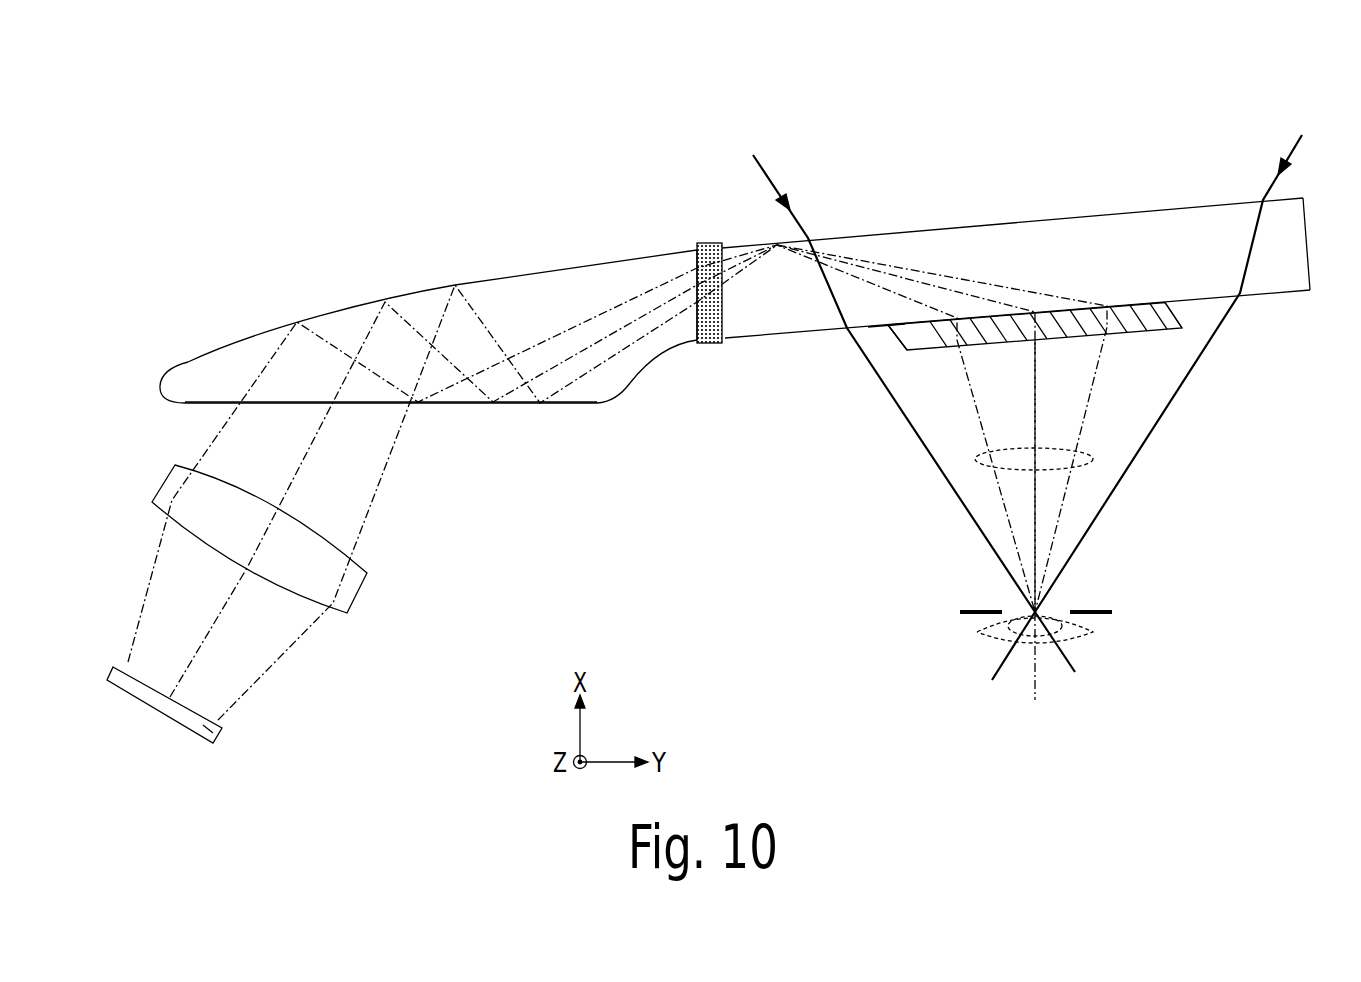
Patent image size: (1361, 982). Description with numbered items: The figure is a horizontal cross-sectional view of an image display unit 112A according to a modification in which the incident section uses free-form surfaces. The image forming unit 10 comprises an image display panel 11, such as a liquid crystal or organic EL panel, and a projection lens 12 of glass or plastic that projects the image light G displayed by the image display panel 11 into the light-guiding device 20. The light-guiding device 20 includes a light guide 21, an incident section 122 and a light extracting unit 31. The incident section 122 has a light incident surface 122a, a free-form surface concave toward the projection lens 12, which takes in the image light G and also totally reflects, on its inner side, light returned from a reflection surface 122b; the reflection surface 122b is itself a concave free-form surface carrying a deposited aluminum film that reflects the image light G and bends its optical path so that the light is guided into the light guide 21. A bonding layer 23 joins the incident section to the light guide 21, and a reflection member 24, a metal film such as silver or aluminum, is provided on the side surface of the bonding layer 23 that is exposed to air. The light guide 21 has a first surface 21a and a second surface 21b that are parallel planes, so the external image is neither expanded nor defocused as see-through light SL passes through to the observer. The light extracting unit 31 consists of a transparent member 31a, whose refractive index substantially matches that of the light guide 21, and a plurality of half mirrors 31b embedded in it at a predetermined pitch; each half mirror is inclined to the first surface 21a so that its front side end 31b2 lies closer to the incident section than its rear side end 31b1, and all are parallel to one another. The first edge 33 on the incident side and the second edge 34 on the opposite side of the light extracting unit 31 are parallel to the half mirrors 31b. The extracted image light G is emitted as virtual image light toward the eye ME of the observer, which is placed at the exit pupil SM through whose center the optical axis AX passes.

The image display unit 112A is at (576, 142).
The image forming unit 10 is at (420, 676).
The image display panel 11 is at (222, 736).
The projection lens 12 is at (350, 600).
The light-guiding device 20 is at (784, 559).
The light guide 21 is at (815, 340).
The first surface 21a is at (1173, 304).
The second surface 21b is at (918, 228).
The bonding layer 23 is at (694, 262).
The reflection member 24 is at (708, 243).
The light extracting unit 31 is at (926, 360).
The transparent member 31a is at (1027, 306).
The half mirrors 31b is at (1070, 306).
The rear side end 31b1 is at (1167, 330).
The front side end 31b2 is at (1123, 301).
The first edge 33 is at (889, 334).
The second edge 34 is at (1186, 317).
The incident section 122 is at (630, 395).
The light incident surface 122a is at (425, 405).
The reflection surface 122b is at (340, 306).
The see-through light SL is at (772, 172).
The image light G is at (1082, 462).
The exit pupil SM is at (1085, 607).
The eye ME is at (1078, 622).
The optical axis AX is at (1040, 690).